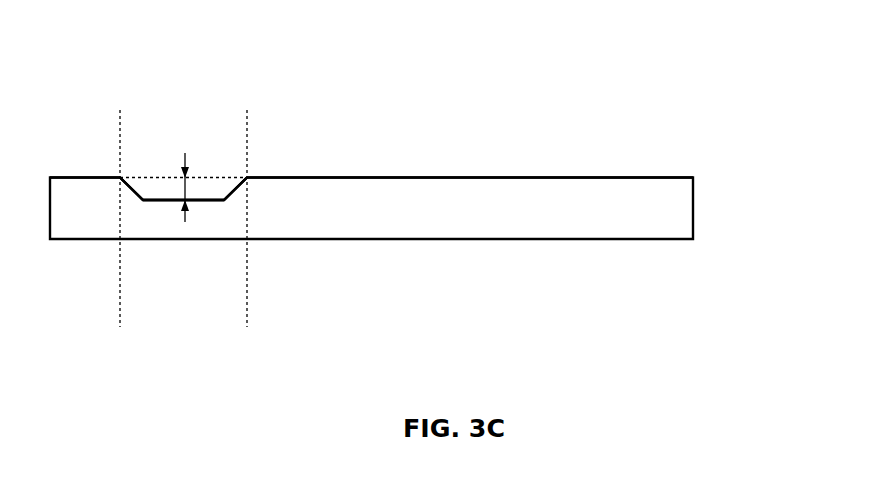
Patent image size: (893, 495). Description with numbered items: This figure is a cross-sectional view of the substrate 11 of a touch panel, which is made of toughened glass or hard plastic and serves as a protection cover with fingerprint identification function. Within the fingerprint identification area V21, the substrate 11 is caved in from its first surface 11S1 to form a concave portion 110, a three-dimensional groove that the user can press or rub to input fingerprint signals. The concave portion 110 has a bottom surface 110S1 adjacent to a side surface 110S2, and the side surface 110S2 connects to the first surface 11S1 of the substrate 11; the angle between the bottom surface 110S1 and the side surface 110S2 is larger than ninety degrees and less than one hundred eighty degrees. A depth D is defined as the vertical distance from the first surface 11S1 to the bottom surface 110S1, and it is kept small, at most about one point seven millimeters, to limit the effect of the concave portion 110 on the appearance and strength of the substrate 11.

The substrate 11 is at (660, 203).
The first surface 11S1 is at (437, 177).
The concave portion 110 is at (153, 202).
The bottom surface 110S1 is at (169, 199).
The side surface 110S2 is at (131, 188).
The fingerprint identification area V21 is at (183, 218).
The depth D is at (197, 187).